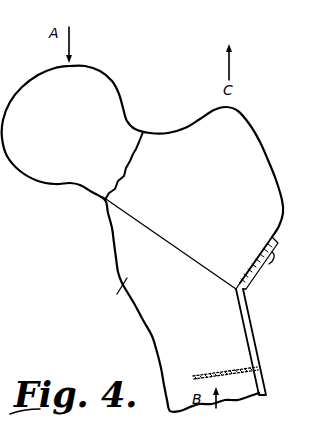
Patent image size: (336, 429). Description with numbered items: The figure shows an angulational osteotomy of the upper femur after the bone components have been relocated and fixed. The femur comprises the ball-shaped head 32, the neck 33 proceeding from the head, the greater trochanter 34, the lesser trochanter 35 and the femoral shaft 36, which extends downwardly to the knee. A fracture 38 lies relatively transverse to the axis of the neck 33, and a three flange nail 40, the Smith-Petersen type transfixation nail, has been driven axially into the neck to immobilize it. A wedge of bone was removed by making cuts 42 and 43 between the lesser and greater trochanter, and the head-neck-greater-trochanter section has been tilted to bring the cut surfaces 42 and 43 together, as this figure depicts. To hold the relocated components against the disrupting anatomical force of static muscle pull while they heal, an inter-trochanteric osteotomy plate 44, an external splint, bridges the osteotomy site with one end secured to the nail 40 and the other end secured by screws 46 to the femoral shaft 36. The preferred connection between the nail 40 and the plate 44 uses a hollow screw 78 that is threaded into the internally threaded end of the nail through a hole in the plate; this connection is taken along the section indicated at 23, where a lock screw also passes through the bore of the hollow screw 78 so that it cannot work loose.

The head 32 is at (35, 85).
The neck 33 is at (118, 128).
The greater trochanter 34 is at (251, 148).
The lesser trochanter 35 is at (114, 295).
The femoral shaft 36 is at (178, 352).
The fracture 38 is at (139, 152).
The three flange nail 40 is at (272, 240).
The cut 42 is at (128, 217).
The cut 43 is at (162, 239).
The inter-trochanteric osteotomy plate 44 is at (258, 342).
The screws 46 is at (227, 360).
The hollow screw 78 is at (278, 258).
The section line 23 is at (250, 249).